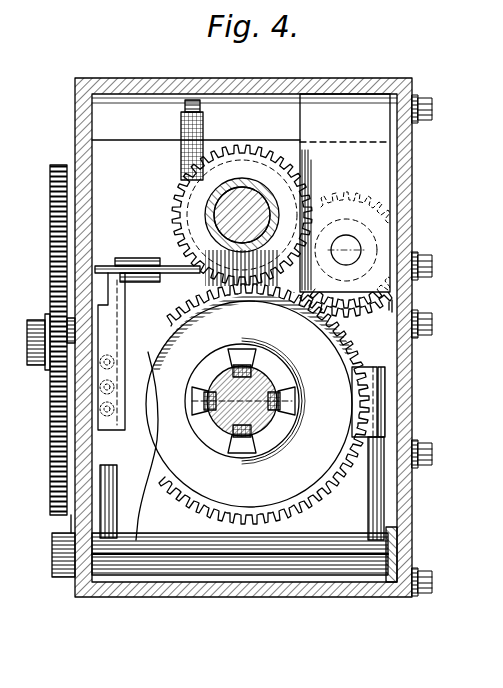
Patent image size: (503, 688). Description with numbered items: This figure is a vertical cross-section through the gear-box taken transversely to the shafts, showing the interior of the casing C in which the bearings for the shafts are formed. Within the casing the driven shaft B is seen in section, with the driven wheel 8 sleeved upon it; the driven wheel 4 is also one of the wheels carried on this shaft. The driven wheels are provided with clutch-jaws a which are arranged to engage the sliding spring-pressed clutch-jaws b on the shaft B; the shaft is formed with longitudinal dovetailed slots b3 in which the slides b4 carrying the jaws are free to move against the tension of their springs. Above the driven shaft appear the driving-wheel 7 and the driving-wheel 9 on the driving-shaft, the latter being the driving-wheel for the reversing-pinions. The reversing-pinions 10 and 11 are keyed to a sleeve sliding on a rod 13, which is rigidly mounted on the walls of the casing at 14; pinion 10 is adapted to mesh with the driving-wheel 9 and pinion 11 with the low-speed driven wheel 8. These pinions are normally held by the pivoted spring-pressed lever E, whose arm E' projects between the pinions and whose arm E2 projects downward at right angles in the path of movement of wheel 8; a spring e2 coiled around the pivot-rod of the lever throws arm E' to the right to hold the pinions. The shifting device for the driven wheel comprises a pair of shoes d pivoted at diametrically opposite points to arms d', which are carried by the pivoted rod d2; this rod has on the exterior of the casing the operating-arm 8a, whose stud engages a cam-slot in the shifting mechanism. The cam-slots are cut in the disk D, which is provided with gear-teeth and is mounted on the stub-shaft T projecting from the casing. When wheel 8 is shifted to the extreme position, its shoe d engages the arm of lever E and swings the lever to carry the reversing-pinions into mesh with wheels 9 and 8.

The casing C is at (412, 178).
The casing wall mounting of rod 13 14 is at (350, 134).
The spring e2 is at (181, 158).
The driving-wheel 7 is at (186, 197).
The driven wheel 4 is at (272, 197).
The rod 13 is at (348, 250).
The driving-wheel 9 is at (398, 252).
The reversing-pinion 10 is at (343, 303).
The reversing-pinion 11 is at (393, 312).
The disk D is at (50, 400).
The stub-shaft T is at (33, 345).
The operating-arm 8a is at (64, 533).
The arm of lever E E' is at (147, 261).
The arm of lever E E2 is at (125, 392).
The pivoted spring-pressed lever E is at (147, 285).
The driven shaft B is at (282, 432).
The clutch-jaws a is at (262, 362).
The clutch-jaws b is at (192, 395).
The dovetailed slots b3 is at (216, 373).
The slides b4 is at (208, 420).
The shoes d is at (364, 402).
The arms d' is at (242, 453).
The driven wheel 8 is at (352, 490).
The pivoted rod d2 is at (180, 533).